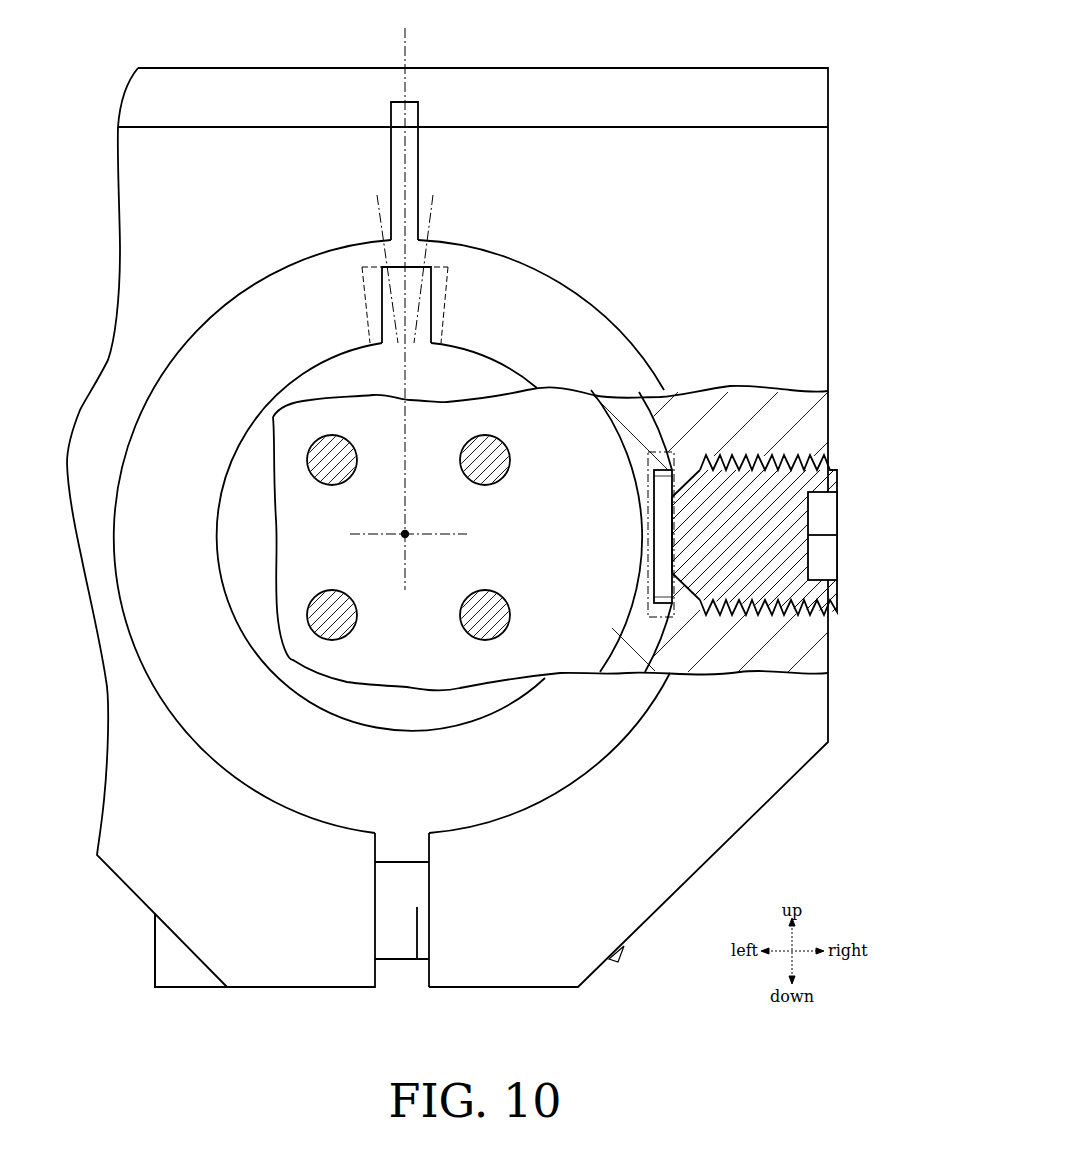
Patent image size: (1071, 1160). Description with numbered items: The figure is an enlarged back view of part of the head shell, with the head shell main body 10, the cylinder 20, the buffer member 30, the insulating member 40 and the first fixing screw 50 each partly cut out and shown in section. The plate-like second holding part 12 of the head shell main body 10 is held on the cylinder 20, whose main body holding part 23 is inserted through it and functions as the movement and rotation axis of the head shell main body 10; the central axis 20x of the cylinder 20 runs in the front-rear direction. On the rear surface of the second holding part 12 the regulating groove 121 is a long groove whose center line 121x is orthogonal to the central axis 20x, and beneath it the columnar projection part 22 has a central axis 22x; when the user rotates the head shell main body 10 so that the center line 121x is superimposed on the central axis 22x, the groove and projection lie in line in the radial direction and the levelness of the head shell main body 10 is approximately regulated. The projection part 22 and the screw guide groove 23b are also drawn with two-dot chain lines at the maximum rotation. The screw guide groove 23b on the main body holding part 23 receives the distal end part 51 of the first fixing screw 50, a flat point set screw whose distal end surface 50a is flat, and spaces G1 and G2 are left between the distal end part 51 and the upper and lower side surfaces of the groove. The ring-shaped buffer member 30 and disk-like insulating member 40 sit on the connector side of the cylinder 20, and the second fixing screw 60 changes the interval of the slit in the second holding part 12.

The head shell main body 10 is at (569, 509).
The second holding part 12 is at (828, 195).
The cylinder 20 is at (450, 538).
The central axis of the cylinder 20x is at (403, 536).
The projection part 22 is at (452, 303).
The central axis of the projection part 22x is at (405, 50).
The main body holding part 23 is at (612, 441).
The screw guide groove 23b is at (645, 546).
The buffer member 30 is at (148, 551).
The insulating member 40 is at (235, 551).
The first fixing screw 50 is at (838, 486).
The distal end surface 50a is at (662, 546).
The distal end part 51 is at (657, 506).
The second fixing screw 60 is at (153, 958).
The regulating groove 121 is at (413, 116).
The center line of the regulating groove 121x is at (380, 218).
The space G1 is at (656, 482).
The space G2 is at (657, 594).